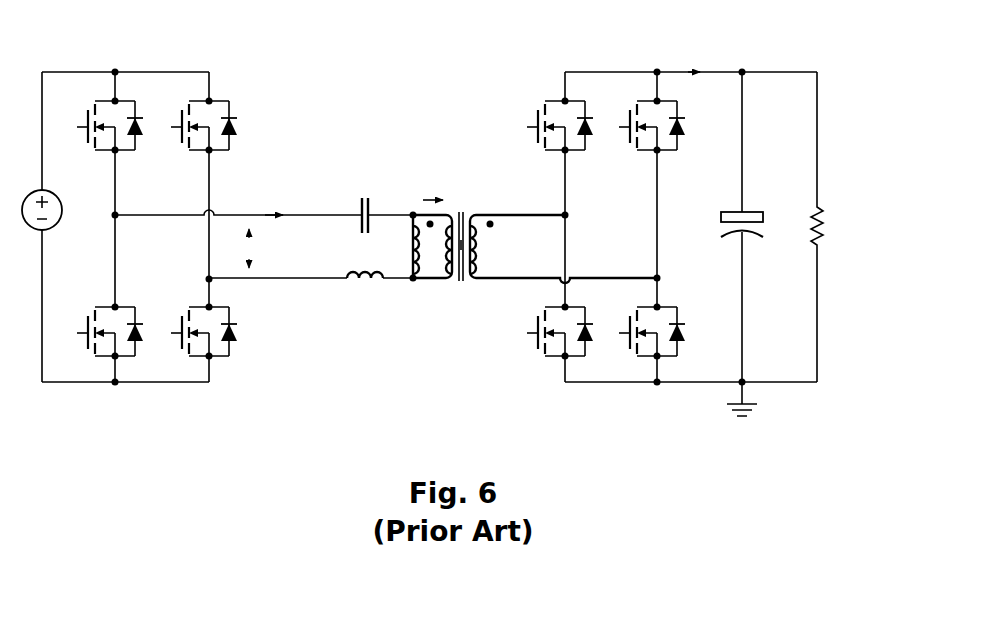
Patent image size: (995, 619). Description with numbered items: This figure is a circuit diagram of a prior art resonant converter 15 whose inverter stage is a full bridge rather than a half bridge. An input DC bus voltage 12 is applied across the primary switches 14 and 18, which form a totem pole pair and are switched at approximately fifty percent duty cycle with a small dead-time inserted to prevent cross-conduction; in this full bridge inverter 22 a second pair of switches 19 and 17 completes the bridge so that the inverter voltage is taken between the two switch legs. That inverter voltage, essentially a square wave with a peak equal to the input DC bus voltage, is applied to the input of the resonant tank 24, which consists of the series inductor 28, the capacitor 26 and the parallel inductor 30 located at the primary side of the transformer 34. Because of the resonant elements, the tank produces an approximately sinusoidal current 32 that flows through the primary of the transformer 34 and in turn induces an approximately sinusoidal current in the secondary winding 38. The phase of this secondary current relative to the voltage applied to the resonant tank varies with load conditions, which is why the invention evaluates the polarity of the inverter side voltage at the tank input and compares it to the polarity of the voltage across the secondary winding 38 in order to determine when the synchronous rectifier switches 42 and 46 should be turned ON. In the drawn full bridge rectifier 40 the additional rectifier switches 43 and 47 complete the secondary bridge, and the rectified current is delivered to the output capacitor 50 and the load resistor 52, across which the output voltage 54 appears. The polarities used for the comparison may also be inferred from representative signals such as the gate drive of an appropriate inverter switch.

The input DC bus voltage 12 is at (56, 227).
The primary switch 14 is at (110, 114).
The prior art resonant converter 15 is at (398, 63).
The inverter switch 17 is at (204, 320).
The primary switch 18 is at (110, 320).
The inverter switch 19 is at (204, 114).
The inverter 22 is at (284, 183).
The resonant tank 24 is at (274, 266).
The capacitor 26 is at (360, 206).
The series inductor 28 is at (365, 290).
The parallel inductor 30 is at (415, 229).
The sinusoidal current 32 is at (438, 178).
The transformer 34 is at (457, 292).
The transformer secondary winding 38 is at (518, 232).
The rectifier 40 is at (700, 79).
The rectifier switch 42 is at (652, 114).
The rectifier switch 43 is at (560, 320).
The rectifier switch 46 is at (560, 114).
The rectifier switch 47 is at (652, 320).
The output capacitor 50 is at (736, 243).
The load resistor 52 is at (801, 227).
The output voltage 54 is at (853, 205).